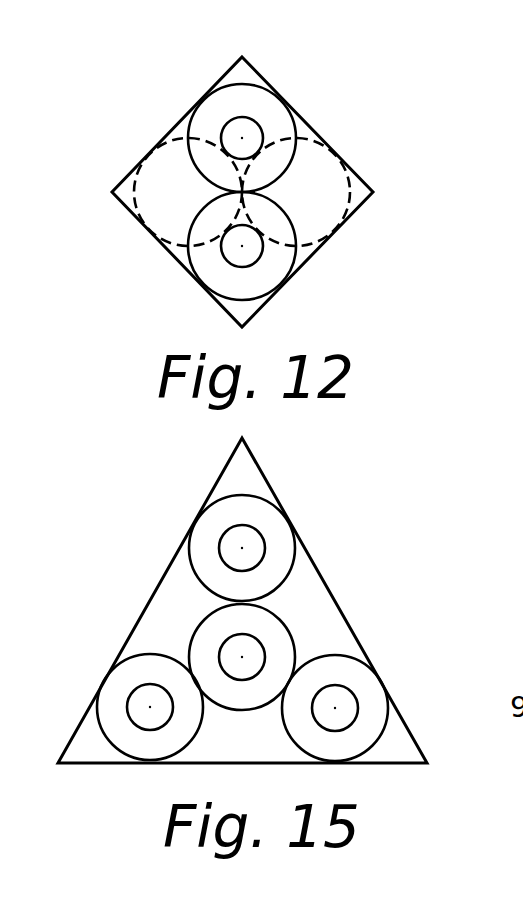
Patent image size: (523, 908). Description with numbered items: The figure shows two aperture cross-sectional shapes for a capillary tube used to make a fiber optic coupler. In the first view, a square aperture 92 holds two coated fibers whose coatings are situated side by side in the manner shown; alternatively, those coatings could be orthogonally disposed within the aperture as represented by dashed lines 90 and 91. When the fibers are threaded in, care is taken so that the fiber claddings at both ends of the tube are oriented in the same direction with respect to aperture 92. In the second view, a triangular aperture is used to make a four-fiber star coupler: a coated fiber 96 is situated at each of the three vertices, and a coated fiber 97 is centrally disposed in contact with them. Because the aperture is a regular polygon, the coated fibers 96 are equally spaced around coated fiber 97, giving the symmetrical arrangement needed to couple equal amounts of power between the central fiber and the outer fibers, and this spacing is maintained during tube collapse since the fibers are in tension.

In FIG. 12, the dashed line 90 is at (358, 184).
In FIG. 12, the dashed line 91 is at (133, 193).
In FIG. 12, the aperture 92 is at (301, 130).
In FIG. 15, the coated fiber 96 is at (290, 577).
In FIG. 15, the coated fiber 97 is at (195, 628).